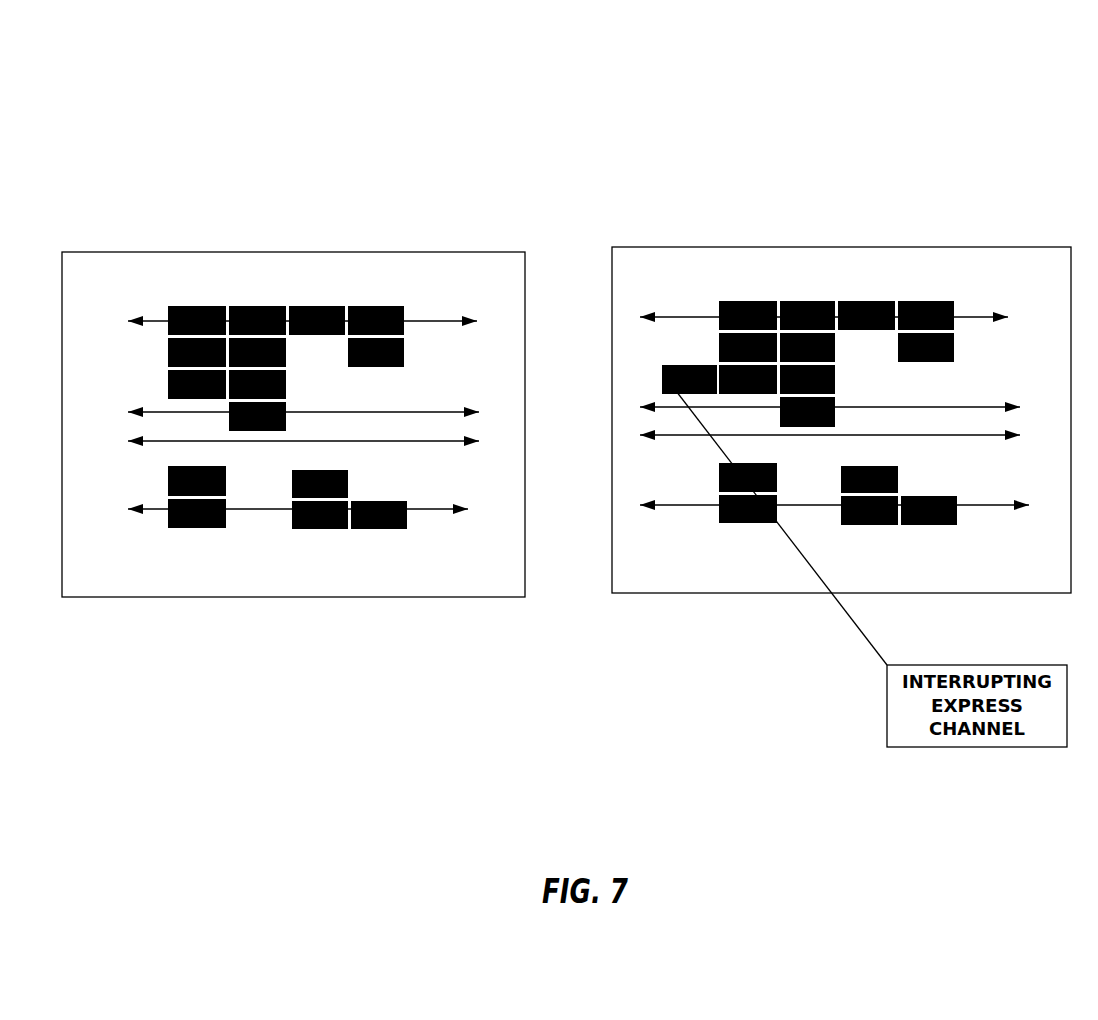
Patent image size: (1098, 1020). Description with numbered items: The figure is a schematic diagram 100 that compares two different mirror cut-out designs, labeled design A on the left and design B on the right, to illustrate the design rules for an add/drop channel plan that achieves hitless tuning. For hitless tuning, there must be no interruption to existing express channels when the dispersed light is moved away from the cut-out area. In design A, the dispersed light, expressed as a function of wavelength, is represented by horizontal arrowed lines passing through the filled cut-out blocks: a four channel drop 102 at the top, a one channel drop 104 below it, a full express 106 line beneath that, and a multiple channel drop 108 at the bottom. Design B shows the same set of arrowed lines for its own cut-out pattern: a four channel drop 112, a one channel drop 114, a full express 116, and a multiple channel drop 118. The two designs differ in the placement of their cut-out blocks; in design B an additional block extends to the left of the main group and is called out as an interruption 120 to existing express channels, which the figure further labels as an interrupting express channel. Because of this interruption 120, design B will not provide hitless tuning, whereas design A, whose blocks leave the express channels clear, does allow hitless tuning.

The schematic diagram 100 is at (568, 86).
The four channel drop 102 is at (162, 320).
The one channel drop 104 is at (160, 411).
The full express 106 is at (158, 440).
The multiple channel drop 108 is at (160, 508).
The four channel drop 112 is at (975, 313).
The one channel drop 114 is at (968, 405).
The full express 116 is at (990, 434).
The multiple channel drop 118 is at (990, 504).
The interruption 120 is at (661, 366).